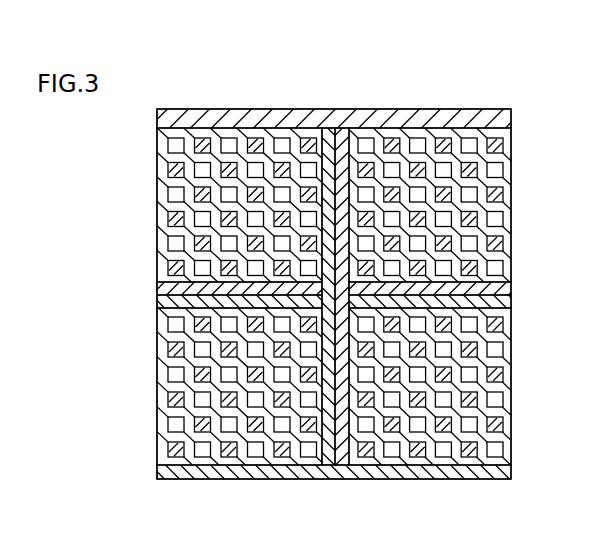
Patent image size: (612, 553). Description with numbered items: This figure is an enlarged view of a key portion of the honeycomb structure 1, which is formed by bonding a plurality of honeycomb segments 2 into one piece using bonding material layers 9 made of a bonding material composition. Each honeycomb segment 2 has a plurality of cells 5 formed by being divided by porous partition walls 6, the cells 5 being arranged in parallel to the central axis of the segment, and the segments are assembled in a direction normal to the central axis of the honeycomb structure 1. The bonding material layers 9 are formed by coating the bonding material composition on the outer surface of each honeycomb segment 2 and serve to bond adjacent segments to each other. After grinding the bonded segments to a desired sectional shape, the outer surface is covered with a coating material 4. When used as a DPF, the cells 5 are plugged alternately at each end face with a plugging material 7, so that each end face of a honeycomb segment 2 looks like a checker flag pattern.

The honeycomb structure 1 is at (262, 69).
The honeycomb segment 2 is at (150, 190).
The coating material 4 is at (396, 118).
The cell 5 is at (231, 147).
The partition wall 6 is at (268, 147).
The plugging material 7 is at (203, 145).
The bonding material layer 9 is at (347, 130).